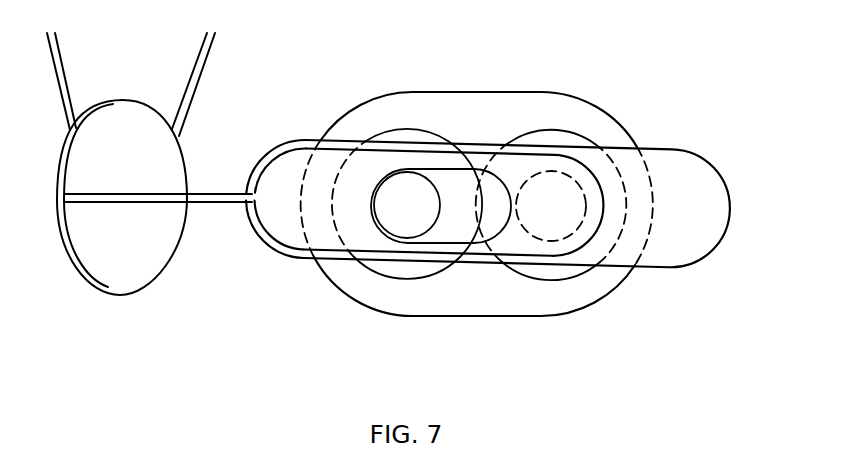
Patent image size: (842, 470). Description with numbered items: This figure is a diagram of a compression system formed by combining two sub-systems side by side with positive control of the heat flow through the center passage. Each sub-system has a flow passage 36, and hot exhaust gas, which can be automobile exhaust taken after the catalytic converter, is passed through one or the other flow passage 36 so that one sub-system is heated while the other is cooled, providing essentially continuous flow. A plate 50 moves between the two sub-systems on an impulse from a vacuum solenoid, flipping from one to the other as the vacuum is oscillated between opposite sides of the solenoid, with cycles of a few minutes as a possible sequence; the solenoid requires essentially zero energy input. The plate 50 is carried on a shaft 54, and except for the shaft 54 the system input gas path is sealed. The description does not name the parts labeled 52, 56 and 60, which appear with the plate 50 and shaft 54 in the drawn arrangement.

The flow passage 36 is at (478, 206).
The plate 50 is at (482, 147).
The loop 52 is at (131, 164).
The shaft 54 is at (227, 204).
The sleeve 56 is at (298, 141).
The drum 60 is at (378, 240).